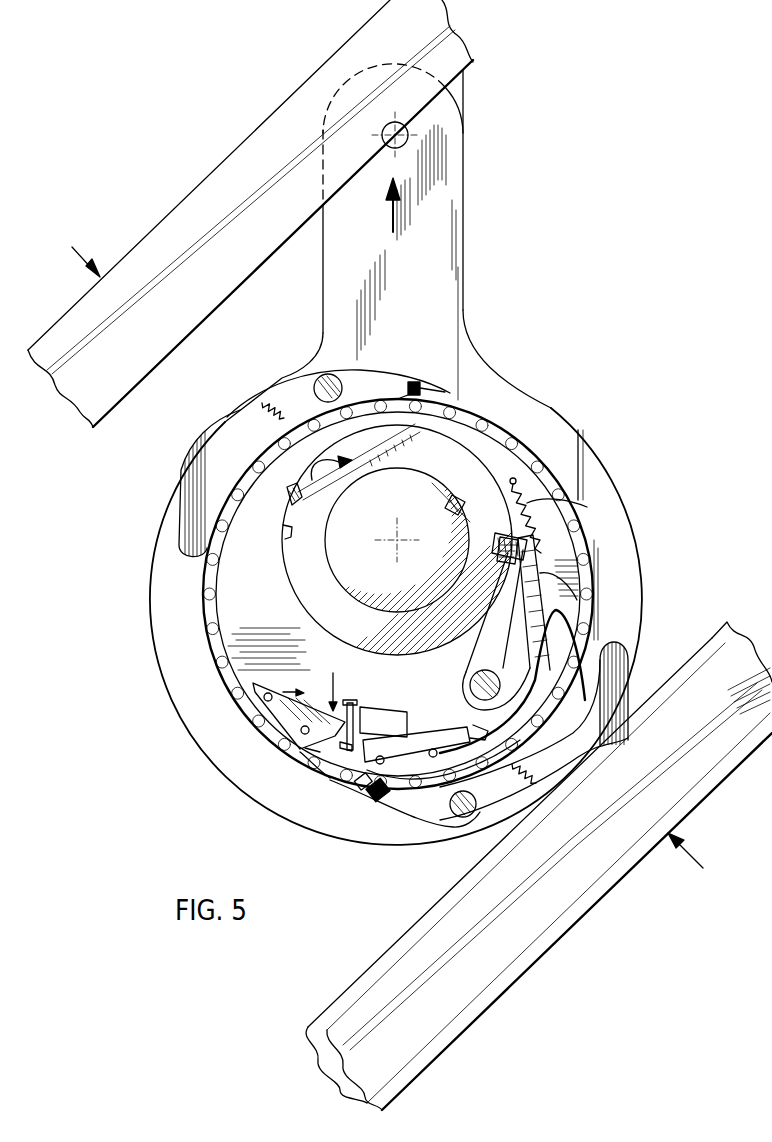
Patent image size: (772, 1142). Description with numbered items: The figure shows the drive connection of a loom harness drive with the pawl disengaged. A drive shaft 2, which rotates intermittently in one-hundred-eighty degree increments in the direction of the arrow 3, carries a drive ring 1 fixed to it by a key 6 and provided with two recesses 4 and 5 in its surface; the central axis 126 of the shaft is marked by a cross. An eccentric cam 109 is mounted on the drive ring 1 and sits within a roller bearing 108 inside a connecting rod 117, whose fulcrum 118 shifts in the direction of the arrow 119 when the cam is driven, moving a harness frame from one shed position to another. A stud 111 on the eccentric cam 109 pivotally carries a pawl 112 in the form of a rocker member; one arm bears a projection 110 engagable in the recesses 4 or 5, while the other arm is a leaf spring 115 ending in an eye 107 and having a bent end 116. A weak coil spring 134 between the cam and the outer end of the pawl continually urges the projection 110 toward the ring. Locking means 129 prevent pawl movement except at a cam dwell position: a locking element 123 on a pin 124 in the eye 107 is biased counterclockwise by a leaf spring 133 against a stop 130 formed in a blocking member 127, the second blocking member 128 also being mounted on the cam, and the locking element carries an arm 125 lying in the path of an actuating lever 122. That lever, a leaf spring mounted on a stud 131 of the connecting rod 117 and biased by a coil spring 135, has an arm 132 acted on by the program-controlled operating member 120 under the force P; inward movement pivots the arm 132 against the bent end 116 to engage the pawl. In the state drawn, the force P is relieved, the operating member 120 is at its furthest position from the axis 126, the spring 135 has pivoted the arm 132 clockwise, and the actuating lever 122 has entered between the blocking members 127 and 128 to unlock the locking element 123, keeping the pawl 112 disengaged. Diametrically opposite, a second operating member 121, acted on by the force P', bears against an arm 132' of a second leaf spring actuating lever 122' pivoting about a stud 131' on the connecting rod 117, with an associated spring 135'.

The drive ring 1 is at (298, 575).
The drive shaft 2 is at (288, 490).
The arrow 3 is at (331, 463).
The recess 4 is at (500, 548).
The recess 5 is at (281, 533).
The key 6 is at (448, 512).
The eye 107 is at (360, 800).
The roller bearing 108 is at (222, 652).
The eccentric cam 109 is at (227, 590).
The projection 110 is at (512, 566).
The stud 111 is at (470, 686).
The pawl 112 is at (583, 590).
The leaf spring 115 is at (457, 729).
The bent end 116 is at (575, 632).
The connecting rod 117 is at (448, 312).
The fulcrum 118 is at (415, 135).
The arrow 119 is at (396, 208).
The operating member 120 is at (520, 965).
The second operating member 121 is at (173, 237).
The actuating lever 122 is at (295, 774).
The second actuating lever 122' is at (451, 388).
The locking element 123 is at (352, 703).
The pin 124 is at (377, 799).
The arm 125 is at (345, 750).
The central axis 126 is at (392, 546).
The blocking member 127 is at (278, 681).
The blocking member 128 is at (401, 735).
The locking means 129 is at (333, 678).
The stop 130 is at (299, 675).
The stud 131 is at (405, 827).
The stud 131' is at (338, 369).
The arm 132 is at (561, 730).
The arm 132' is at (195, 487).
The leaf spring 133 is at (362, 727).
The coil spring 134 is at (560, 510).
The coil spring 135 is at (545, 755).
The coil spring 135' is at (261, 382).
The force P is at (703, 849).
The force P' is at (80, 242).